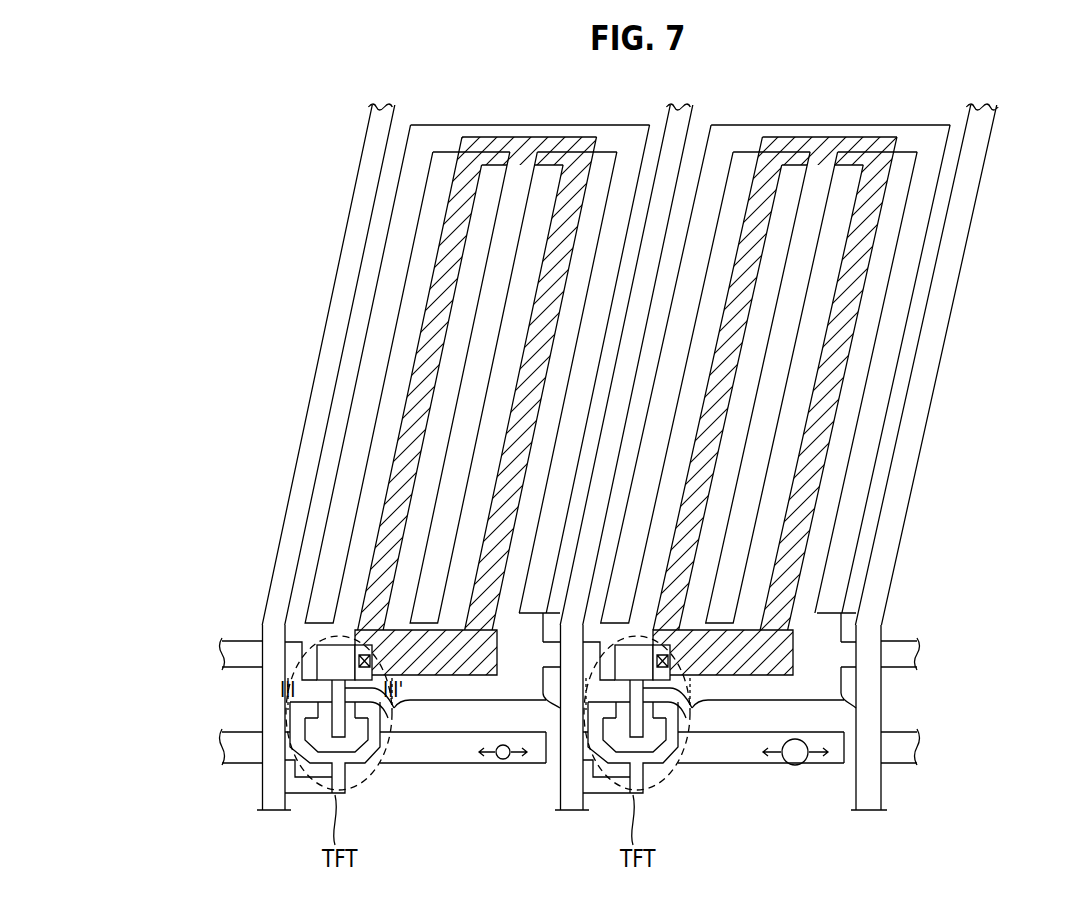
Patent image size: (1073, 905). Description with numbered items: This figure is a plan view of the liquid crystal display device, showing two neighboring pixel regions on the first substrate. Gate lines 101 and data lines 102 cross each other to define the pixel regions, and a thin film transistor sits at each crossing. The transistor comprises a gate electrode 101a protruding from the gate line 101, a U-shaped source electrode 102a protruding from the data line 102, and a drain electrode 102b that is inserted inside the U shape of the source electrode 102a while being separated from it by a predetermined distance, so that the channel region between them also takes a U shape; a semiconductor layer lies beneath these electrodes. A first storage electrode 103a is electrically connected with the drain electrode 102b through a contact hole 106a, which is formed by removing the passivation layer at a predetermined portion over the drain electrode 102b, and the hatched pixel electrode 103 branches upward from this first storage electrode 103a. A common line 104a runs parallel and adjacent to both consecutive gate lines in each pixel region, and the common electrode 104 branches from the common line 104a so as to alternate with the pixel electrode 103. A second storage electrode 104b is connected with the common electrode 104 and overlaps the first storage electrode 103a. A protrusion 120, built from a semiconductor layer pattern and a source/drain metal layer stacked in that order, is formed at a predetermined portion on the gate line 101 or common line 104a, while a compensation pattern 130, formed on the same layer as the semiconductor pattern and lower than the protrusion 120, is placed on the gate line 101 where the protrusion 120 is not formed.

The gate line 101 is at (410, 766).
The gate electrode 101a is at (283, 716).
The data line 102 is at (262, 692).
The source electrode 102a is at (365, 780).
The drain electrode 102b is at (396, 710).
The pixel electrode 103 is at (860, 302).
The first storage electrode 103a is at (797, 652).
The common electrode 104 is at (720, 220).
The common line 104a is at (883, 689).
The second storage electrode 104b is at (857, 708).
The contact hole 106a is at (373, 661).
The protrusion 120 is at (503, 762).
The compensation pattern 130 is at (797, 767).